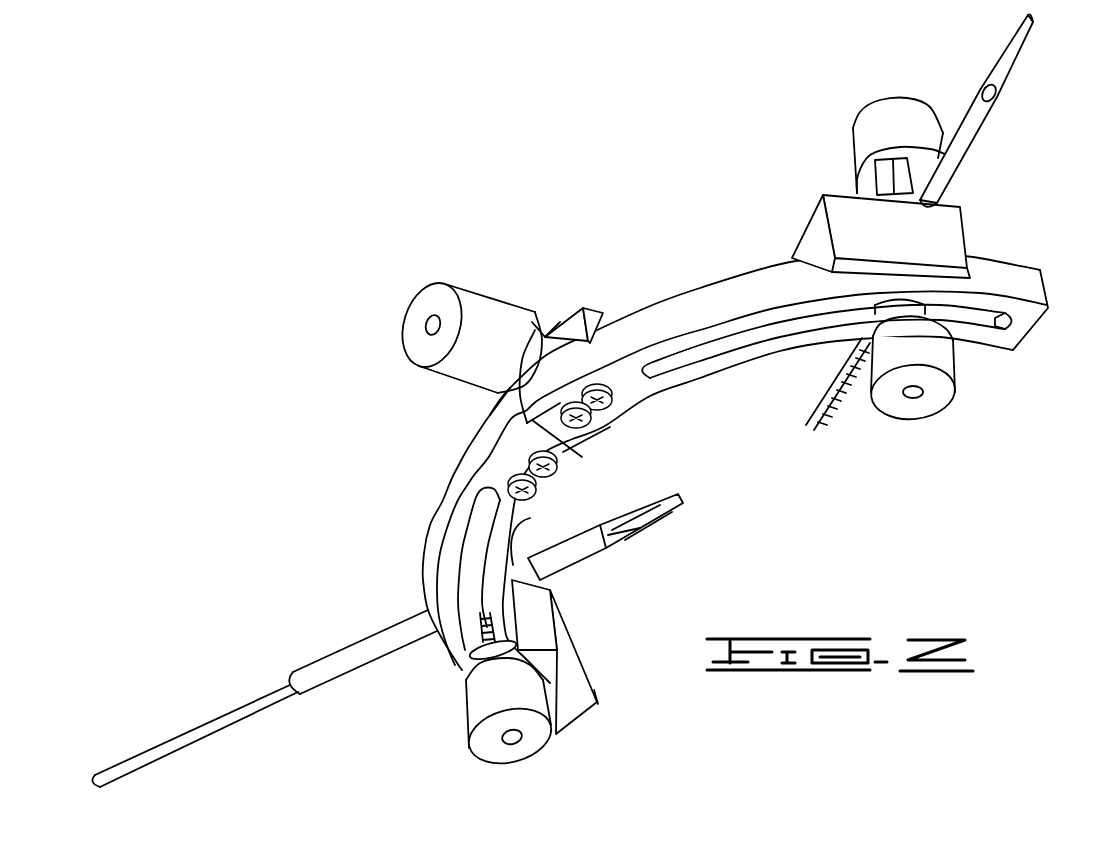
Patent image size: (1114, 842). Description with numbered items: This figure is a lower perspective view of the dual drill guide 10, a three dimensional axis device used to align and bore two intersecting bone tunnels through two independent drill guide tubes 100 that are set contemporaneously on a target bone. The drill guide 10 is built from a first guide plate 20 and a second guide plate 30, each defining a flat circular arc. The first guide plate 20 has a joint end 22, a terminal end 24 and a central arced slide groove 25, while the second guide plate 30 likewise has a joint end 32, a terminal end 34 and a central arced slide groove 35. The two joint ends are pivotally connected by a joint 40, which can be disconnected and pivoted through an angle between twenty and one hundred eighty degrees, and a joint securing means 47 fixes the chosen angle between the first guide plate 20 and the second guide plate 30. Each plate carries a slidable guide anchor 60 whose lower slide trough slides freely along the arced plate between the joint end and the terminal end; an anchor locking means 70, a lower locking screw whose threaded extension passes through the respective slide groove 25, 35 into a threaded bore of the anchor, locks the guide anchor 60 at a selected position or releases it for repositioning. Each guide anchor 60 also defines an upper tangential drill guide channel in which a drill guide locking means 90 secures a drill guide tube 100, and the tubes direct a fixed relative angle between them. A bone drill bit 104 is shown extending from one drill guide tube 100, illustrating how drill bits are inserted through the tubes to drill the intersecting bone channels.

The dual drill guide 10 is at (392, 232).
The first guide plate 20 is at (710, 498).
The joint end 22 is at (604, 418).
The terminal end 24 is at (1033, 330).
The central arced slide groove 25 is at (970, 320).
The second guide plate 30 is at (447, 507).
The joint end 32 is at (563, 452).
The terminal end 34 is at (573, 718).
The central arced slide groove 35 is at (470, 568).
The joint 40 is at (492, 330).
The joint securing means 47 is at (520, 367).
The slidable guide anchor 60 is at (921, 179).
The anchor locking means 70 is at (908, 312).
The drill guide locking means 90 is at (870, 122).
The drill guide tube 100 is at (983, 108).
The drill bit 104 is at (650, 530).